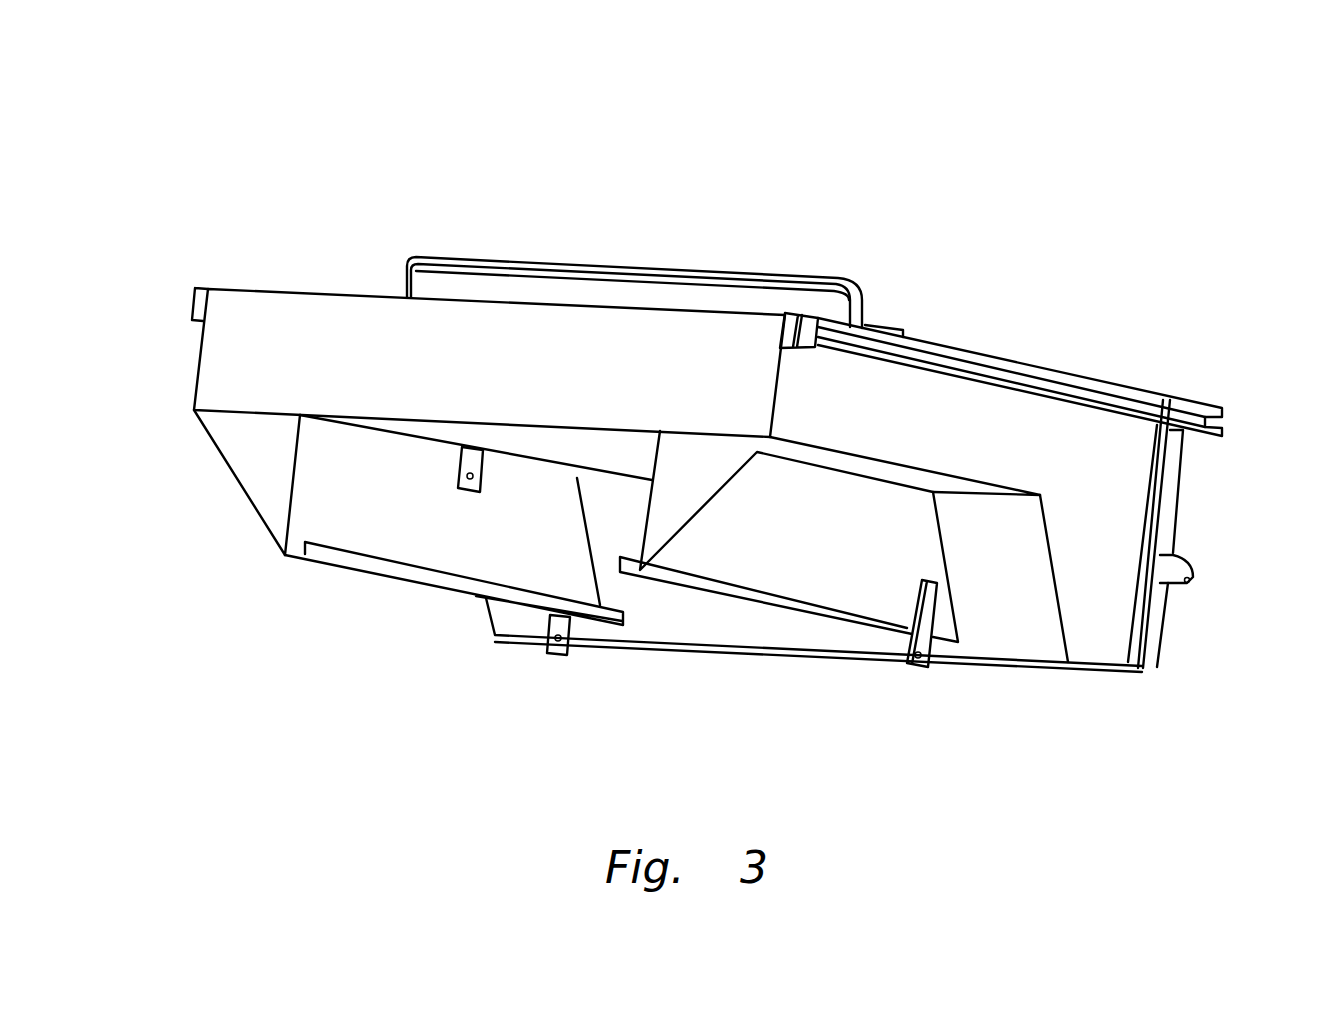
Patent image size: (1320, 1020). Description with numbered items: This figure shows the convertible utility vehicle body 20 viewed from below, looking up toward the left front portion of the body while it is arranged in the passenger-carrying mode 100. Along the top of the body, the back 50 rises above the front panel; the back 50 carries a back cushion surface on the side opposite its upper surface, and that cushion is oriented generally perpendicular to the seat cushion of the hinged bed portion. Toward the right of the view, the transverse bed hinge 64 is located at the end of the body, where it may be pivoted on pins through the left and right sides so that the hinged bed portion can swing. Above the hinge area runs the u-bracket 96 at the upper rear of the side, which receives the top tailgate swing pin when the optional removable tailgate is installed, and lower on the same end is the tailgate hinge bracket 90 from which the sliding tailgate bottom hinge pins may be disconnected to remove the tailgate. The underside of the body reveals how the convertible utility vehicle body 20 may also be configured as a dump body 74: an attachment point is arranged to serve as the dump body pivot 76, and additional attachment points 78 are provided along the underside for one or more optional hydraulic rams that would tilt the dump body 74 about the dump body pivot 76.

The convertible utility vehicle body 20 is at (721, 427).
The back 50 is at (887, 325).
The transverse bed hinge 64 is at (1043, 482).
The dump body 74 is at (800, 657).
The dump body pivot 76 is at (932, 660).
The attachment points 78 is at (465, 493).
The tailgate hinge bracket 90 is at (1175, 575).
The u-bracket 96 is at (1200, 415).
The passenger-carrying mode 100 is at (1095, 246).